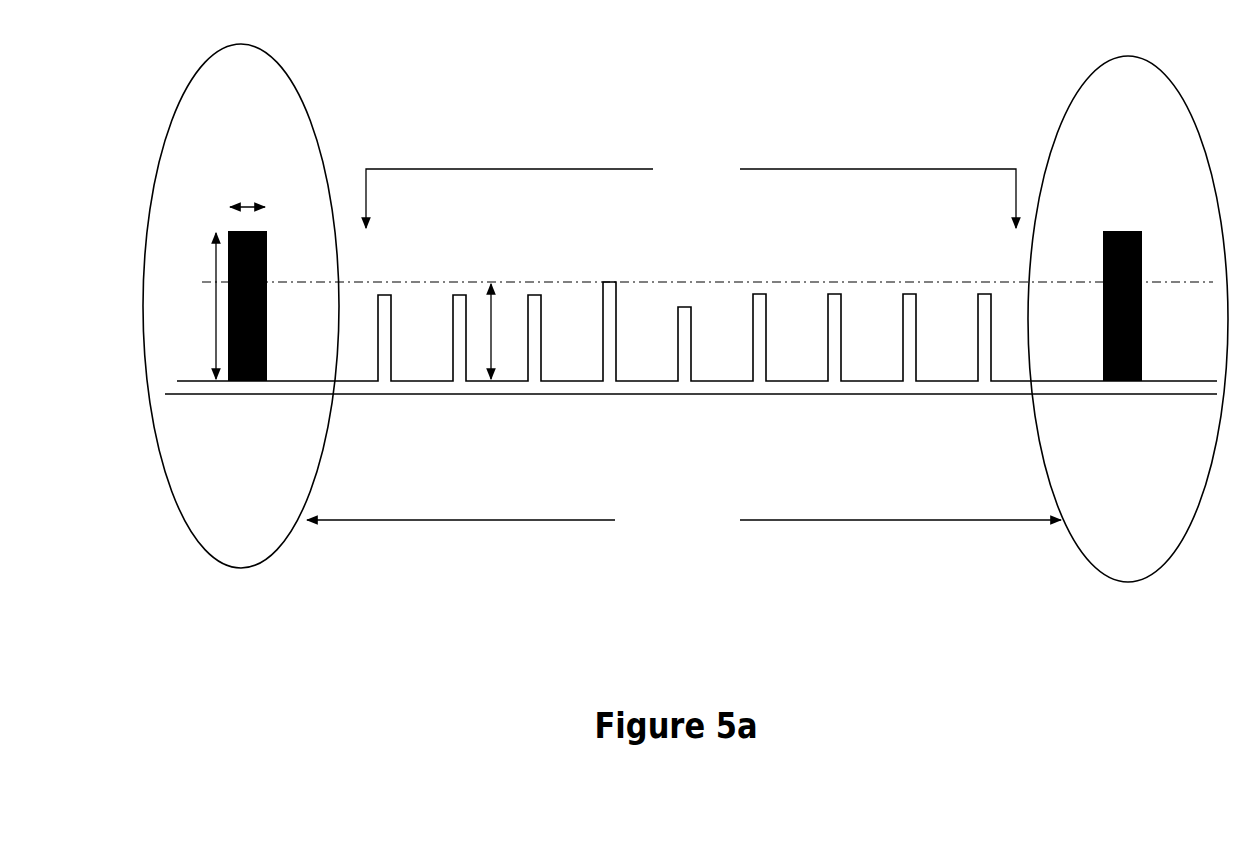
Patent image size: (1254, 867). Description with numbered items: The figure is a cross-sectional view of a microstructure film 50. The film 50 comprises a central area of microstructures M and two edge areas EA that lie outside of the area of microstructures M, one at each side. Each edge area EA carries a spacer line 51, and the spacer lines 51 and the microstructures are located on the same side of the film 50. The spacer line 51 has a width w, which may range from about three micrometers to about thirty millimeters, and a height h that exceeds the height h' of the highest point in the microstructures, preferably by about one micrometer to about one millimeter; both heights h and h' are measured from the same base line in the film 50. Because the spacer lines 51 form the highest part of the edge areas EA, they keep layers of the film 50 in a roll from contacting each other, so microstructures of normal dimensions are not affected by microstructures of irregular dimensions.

The film 50 is at (691, 212).
The spacer line 51 is at (254, 396).
The width of the spacer line w is at (249, 171).
The height of the spacer line h is at (192, 306).
The height of the highest point in the microstructures h' is at (507, 331).
The area of microstructures M is at (691, 191).
The edge area EA is at (684, 519).